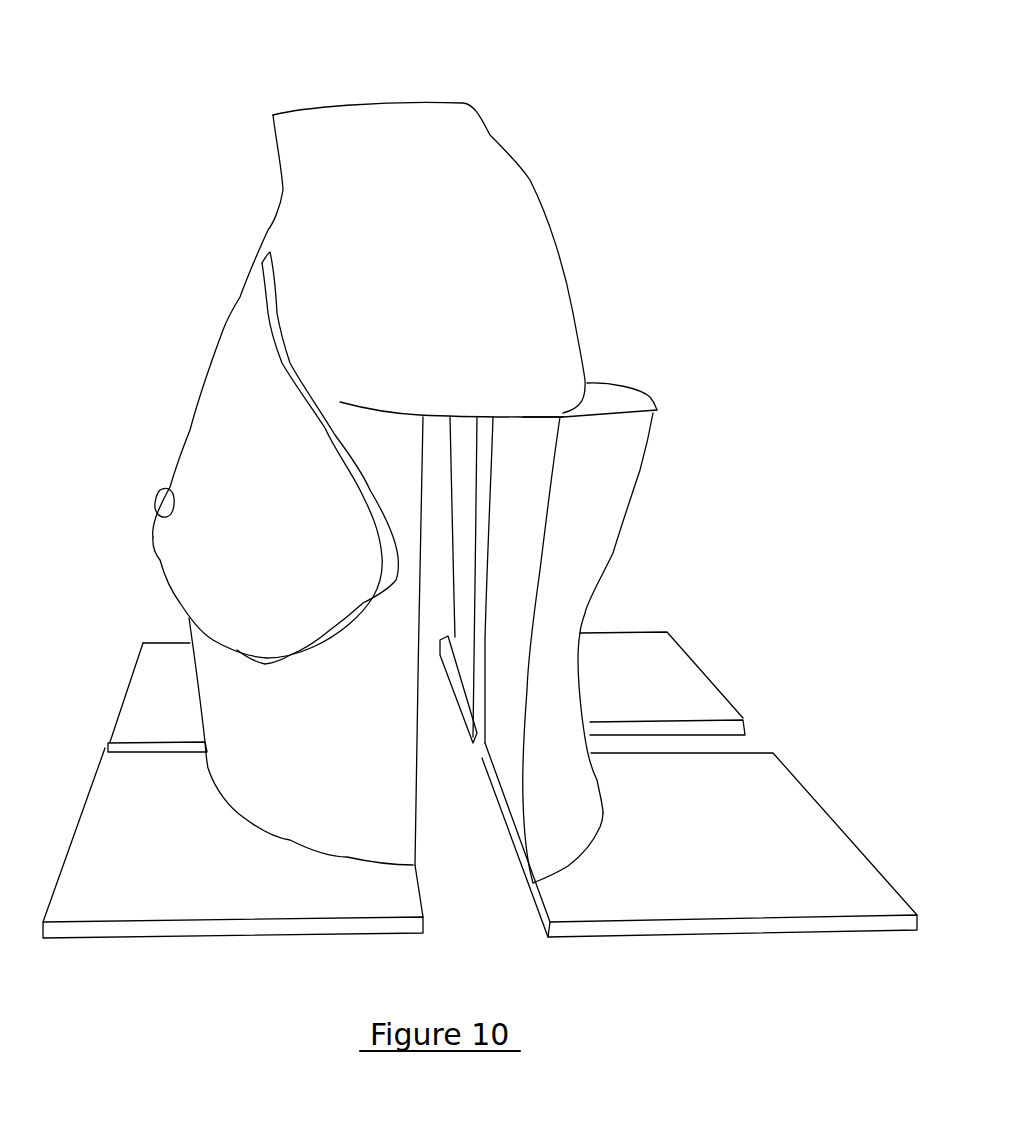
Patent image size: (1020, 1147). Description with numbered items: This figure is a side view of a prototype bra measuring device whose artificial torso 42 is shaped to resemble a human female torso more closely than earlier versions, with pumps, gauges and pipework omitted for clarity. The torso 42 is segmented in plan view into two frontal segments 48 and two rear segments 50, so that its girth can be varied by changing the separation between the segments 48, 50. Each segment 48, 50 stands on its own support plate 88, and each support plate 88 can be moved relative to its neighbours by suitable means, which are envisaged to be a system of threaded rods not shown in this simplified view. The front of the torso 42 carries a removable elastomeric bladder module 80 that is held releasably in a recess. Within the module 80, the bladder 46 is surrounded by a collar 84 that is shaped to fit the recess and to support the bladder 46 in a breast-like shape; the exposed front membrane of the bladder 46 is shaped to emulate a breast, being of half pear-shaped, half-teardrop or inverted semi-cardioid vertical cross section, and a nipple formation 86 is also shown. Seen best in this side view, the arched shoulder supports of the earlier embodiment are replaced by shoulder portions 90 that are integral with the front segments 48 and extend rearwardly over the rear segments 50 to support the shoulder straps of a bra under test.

The artificial torso 42 is at (605, 103).
The bladder 46 is at (173, 557).
The frontal segment 48 is at (348, 115).
The rear segment 50 is at (628, 460).
The bladder module 80 is at (272, 498).
The collar 84 is at (290, 377).
The nipple formation 86 is at (160, 490).
The support plate 88 is at (133, 708).
The shoulder portion 90 is at (520, 413).